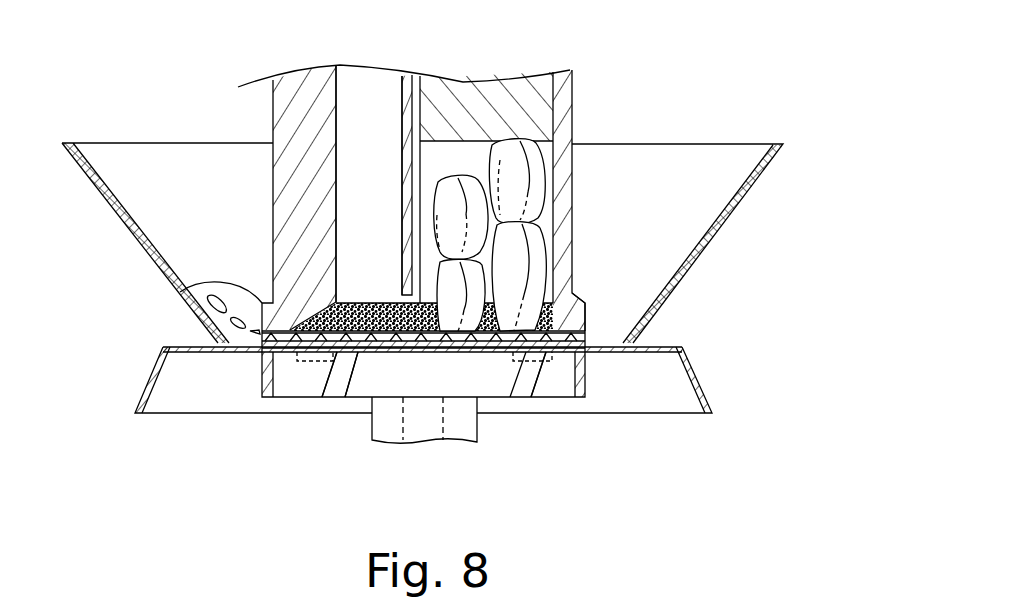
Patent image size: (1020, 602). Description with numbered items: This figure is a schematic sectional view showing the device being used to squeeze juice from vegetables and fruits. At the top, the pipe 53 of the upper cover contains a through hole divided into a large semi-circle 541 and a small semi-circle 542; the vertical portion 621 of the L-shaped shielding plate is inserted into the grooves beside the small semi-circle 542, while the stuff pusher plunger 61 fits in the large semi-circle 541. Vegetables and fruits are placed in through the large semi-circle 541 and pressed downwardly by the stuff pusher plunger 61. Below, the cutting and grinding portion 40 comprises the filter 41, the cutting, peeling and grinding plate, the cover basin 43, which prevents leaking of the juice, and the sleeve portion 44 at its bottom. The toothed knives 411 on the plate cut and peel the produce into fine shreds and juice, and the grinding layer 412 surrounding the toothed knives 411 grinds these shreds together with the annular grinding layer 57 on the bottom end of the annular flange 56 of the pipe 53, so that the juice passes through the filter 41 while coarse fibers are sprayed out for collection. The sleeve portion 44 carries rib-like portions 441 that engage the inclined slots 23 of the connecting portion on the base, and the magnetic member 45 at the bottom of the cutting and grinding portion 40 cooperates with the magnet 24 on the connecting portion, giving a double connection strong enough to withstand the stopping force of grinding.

The pipe 53 is at (290, 78).
The small semi-circle 542 is at (370, 73).
The vertical portion 621 is at (405, 75).
The stuff pusher plunger 61 is at (488, 97).
The large semi-circle 541 is at (548, 162).
The toothed knives 411 is at (580, 337).
The filter 41 is at (730, 215).
The annular flange 56 is at (180, 292).
The annular grinding layer 57 is at (590, 329).
The grinding layer 412 is at (608, 349).
The sleeve portion 44 is at (263, 387).
The rib-like portions 441 is at (337, 388).
The inclined slots 23 is at (323, 432).
The magnetic member 45 is at (530, 352).
The magnet 24 is at (545, 397).
The cover basin 43 is at (702, 395).
The cutting and grinding portion 40 is at (240, 448).